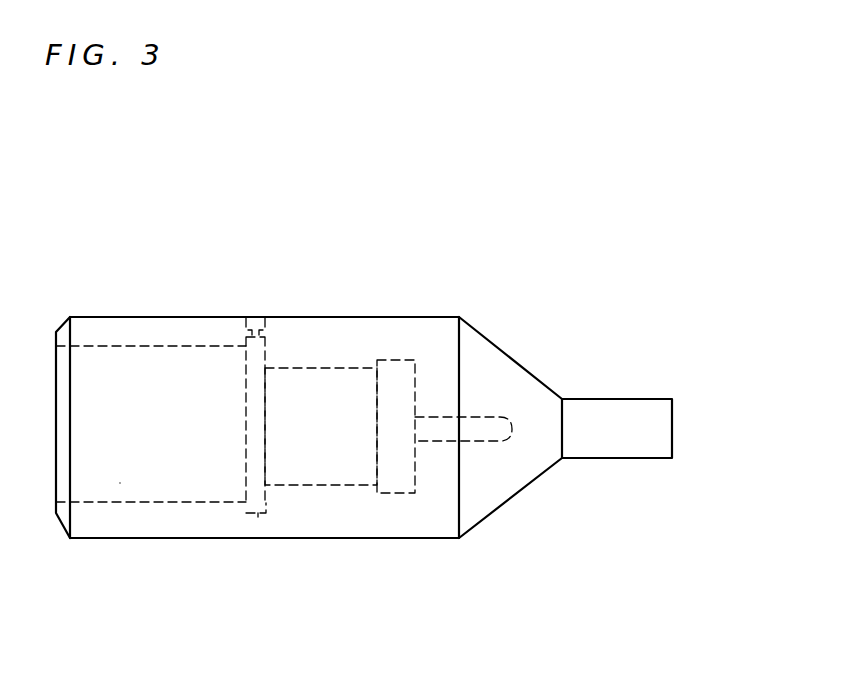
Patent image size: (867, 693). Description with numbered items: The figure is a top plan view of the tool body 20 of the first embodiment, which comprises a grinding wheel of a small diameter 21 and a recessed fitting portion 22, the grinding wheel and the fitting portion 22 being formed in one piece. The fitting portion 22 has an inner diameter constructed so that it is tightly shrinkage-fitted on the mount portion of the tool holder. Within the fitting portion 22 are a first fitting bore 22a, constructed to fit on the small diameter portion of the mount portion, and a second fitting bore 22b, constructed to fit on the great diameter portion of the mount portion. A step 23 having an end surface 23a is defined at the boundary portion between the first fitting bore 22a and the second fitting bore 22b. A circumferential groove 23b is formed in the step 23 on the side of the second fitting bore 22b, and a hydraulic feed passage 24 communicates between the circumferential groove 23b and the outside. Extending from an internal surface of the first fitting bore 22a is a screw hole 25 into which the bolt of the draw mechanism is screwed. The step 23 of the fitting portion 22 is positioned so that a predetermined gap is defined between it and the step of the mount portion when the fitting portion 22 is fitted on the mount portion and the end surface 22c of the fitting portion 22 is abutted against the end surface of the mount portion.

The tool body 20 is at (415, 218).
The grinding wheel of a small diameter 21 is at (599, 399).
The fitting portion 22 is at (174, 310).
The first fitting bore 22a is at (348, 468).
The second fitting bore 22b is at (120, 483).
The end surface of the fitting portion 22c is at (55, 339).
The step 23 is at (266, 502).
The end surface of the step 23a is at (246, 513).
The circumferential groove 23b is at (258, 517).
The hydraulic feed passage 24 is at (265, 331).
The screw hole 25 is at (488, 430).